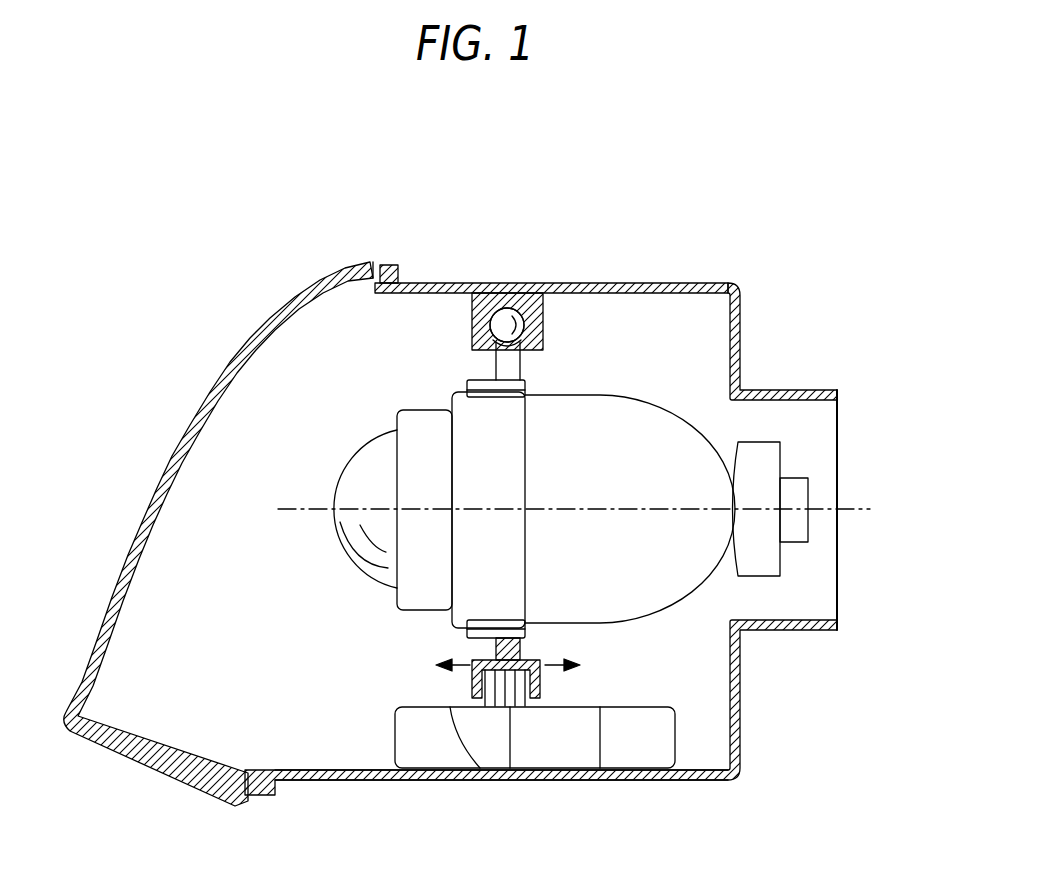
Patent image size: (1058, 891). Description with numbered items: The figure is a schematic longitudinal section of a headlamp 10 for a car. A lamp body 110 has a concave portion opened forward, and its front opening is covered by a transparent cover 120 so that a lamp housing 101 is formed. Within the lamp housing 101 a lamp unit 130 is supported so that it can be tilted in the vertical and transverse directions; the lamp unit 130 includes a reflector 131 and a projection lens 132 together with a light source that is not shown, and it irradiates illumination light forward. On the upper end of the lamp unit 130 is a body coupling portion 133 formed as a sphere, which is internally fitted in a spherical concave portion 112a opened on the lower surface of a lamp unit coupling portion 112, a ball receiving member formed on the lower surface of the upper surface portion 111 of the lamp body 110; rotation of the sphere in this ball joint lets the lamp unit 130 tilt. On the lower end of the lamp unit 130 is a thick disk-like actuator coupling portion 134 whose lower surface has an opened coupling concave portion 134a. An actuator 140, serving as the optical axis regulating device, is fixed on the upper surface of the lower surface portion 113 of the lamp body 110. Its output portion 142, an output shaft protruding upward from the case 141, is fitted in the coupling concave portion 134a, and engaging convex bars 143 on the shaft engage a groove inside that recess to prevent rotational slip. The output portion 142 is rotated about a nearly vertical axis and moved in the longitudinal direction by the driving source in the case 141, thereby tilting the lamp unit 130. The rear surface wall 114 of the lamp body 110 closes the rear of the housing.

The headlamp 10 is at (308, 243).
The lamp housing 101 is at (333, 710).
The lamp body 110 is at (650, 283).
The upper surface portion 111 is at (455, 283).
The lamp unit coupling portion 112 is at (545, 310).
The spherical concave portion 112a is at (475, 322).
The lower surface portion 113 is at (368, 781).
The rear surface wall 114 is at (740, 335).
The transparent cover 120 is at (252, 350).
The lamp unit 130 is at (630, 406).
The reflector 131 is at (665, 575).
The projection lens 132 is at (360, 462).
The body coupling portion 133 is at (507, 320).
The actuator coupling portion 134 is at (482, 660).
The coupling concave portion 134a is at (540, 680).
The actuator 140 is at (642, 752).
The case 141 is at (590, 752).
The output portion 142 is at (510, 705).
The engaging convex bars 143 is at (500, 705).